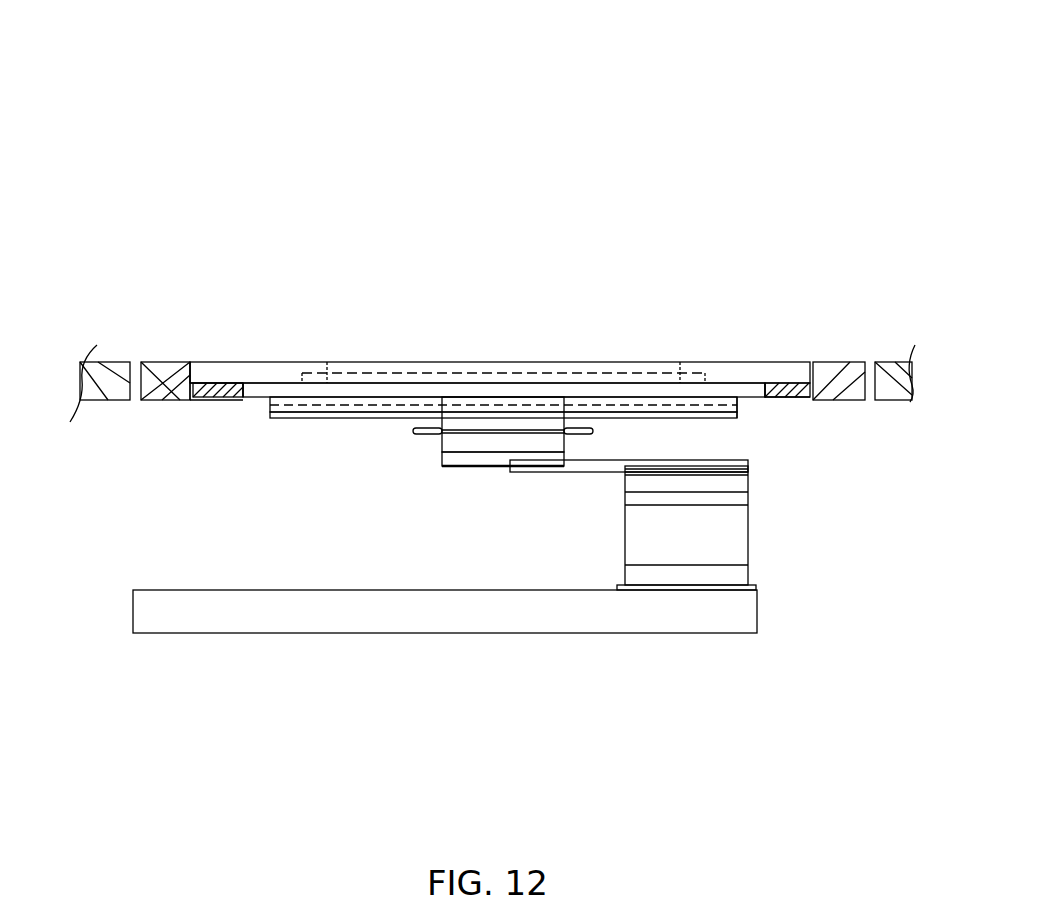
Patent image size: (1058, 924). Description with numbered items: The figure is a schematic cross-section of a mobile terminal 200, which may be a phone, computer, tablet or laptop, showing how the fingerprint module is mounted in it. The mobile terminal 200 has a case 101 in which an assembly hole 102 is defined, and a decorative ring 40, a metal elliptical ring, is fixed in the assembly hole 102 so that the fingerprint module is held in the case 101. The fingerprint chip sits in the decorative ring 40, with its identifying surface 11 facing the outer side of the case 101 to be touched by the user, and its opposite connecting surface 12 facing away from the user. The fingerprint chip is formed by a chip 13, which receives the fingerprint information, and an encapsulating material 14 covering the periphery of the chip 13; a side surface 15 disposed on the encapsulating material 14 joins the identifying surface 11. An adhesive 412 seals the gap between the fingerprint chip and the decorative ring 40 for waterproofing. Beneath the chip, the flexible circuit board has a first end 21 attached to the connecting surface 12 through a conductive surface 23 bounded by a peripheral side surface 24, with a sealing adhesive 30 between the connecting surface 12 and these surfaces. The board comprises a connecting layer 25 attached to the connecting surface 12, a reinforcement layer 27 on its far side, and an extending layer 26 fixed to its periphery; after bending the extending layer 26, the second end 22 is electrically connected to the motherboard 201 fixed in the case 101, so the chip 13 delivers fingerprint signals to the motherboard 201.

The mobile terminal 200 is at (655, 115).
The identifying surface 11 is at (625, 365).
The connecting surface 12 is at (383, 398).
The chip 13 is at (352, 372).
The encapsulating material 14 is at (257, 370).
The side surface 15 is at (183, 362).
The decorative ring 40 is at (155, 365).
The sealing adhesive 30 is at (238, 402).
The peripheral side surface 24 is at (268, 397).
The conductive surface 23 is at (330, 397).
The first end 21 is at (357, 428).
The extending layer 26 is at (453, 408).
The reinforcement layer 27 is at (678, 407).
The connecting layer 25 is at (735, 405).
The second end 22 is at (762, 583).
The motherboard 201 is at (437, 617).
The case 101 is at (893, 360).
The assembly hole 102 is at (862, 362).
The adhesive 412 is at (807, 400).